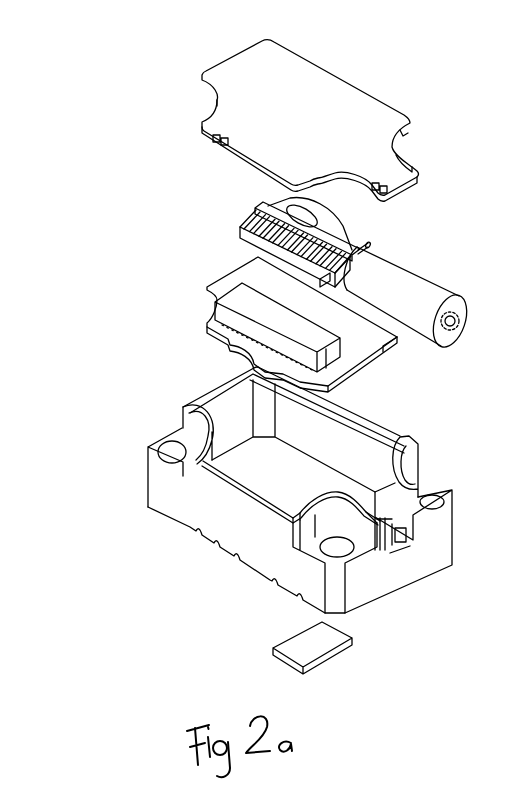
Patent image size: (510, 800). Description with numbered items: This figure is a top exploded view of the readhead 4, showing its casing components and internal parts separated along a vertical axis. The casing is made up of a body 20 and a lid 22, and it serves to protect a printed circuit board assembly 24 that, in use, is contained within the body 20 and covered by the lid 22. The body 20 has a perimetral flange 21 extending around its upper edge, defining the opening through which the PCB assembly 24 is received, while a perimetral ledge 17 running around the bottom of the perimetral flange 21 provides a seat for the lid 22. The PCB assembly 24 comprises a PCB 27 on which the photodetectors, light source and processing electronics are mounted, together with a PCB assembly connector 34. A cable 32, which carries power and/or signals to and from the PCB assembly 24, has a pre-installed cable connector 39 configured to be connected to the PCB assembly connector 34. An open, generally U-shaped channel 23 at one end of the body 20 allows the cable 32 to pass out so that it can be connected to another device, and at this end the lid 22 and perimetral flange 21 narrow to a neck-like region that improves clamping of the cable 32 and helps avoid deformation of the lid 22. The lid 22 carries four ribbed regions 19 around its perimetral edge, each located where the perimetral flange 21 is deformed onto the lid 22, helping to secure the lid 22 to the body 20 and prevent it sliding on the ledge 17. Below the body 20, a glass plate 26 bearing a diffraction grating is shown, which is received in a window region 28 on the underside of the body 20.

The readhead 4 is at (70, 191).
The perimetral ledge 17 is at (187, 404).
The ribbed regions 19 is at (350, 73).
The body 20 is at (148, 490).
The perimetral flange 21 is at (213, 400).
The lid 22 is at (370, 100).
The U-shaped channel 23 is at (408, 537).
The printed circuit board assembly 24 is at (382, 378).
The glass plate 26 is at (327, 656).
The PCB 27 is at (226, 284).
The window region 28 is at (308, 500).
The cable 32 is at (437, 288).
The PCB assembly connector 34 is at (242, 298).
The cable connector 39 is at (251, 213).